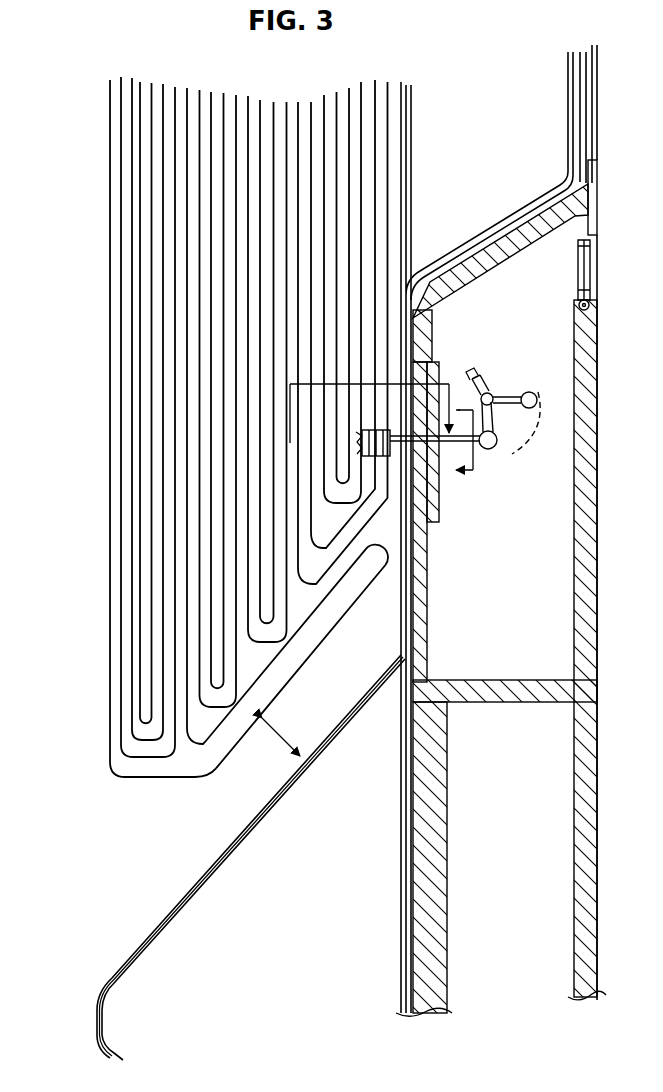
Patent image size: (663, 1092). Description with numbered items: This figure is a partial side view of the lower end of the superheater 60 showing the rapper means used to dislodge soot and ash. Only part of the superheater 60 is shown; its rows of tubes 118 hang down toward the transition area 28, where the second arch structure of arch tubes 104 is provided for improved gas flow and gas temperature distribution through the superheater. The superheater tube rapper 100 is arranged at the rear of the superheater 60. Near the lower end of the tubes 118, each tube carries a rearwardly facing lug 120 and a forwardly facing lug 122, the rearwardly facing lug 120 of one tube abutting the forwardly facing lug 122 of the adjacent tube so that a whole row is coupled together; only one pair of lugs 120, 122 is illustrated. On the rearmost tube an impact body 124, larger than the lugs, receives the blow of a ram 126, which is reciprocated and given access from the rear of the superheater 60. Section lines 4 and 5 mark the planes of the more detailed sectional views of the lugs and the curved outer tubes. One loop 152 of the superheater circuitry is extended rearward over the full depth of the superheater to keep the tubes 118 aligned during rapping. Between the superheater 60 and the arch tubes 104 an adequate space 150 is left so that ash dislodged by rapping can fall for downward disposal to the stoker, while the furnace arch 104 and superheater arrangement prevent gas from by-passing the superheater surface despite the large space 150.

The transition area 28 is at (52, 238).
The superheater 60 is at (94, 266).
The tubes 118 is at (160, 584).
The second arch structure 104 is at (243, 838).
The space 150 is at (278, 734).
The loop 152 is at (340, 612).
The superheater tube rapper 100 is at (448, 412).
The ram 126 is at (475, 446).
The impact body 124 is at (441, 510).
The rearwardly facing lug 120 is at (437, 560).
The forwardly facing lug 122 is at (496, 530).
The section line 4- 4 is at (372, 401).
The section line 5- 5 is at (464, 444).